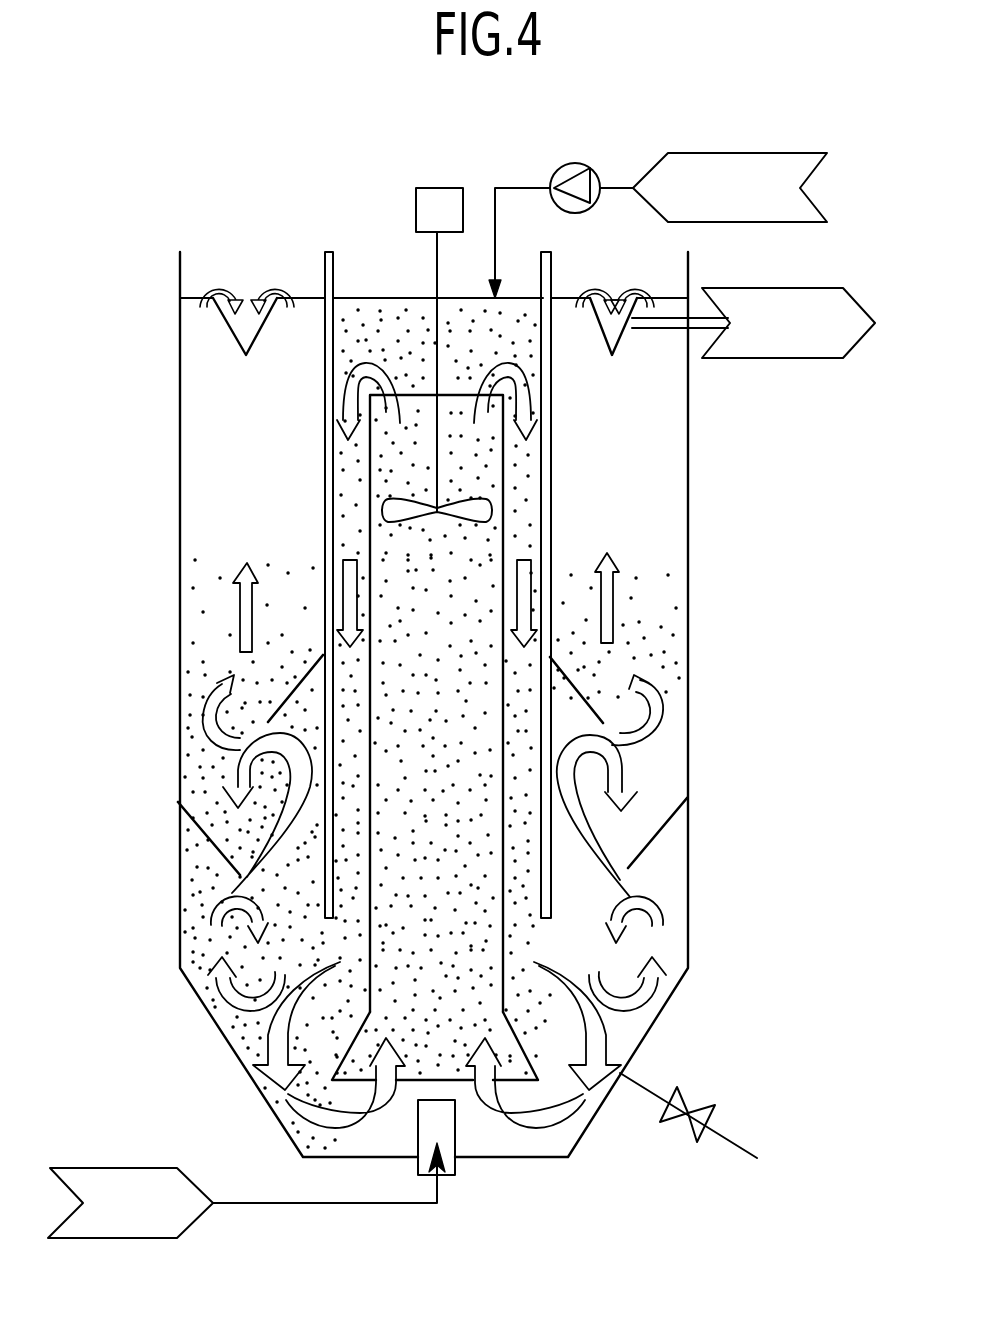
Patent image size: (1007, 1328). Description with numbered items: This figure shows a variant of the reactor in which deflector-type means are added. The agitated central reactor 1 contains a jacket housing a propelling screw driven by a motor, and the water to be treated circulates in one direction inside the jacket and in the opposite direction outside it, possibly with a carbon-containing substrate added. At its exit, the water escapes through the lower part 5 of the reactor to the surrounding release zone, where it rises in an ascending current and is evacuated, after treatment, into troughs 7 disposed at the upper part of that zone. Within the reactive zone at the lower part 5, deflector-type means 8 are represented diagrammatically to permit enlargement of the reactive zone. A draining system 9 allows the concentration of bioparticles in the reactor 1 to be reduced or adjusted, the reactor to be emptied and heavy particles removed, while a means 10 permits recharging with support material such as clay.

The agitated central reactor 1 is at (552, 450).
The lower part 5 is at (530, 952).
The troughs 7 is at (230, 330).
The deflectors type means 8 is at (215, 850).
The draining system 9 is at (713, 1118).
The means for recharging with support material 10 is at (613, 188).